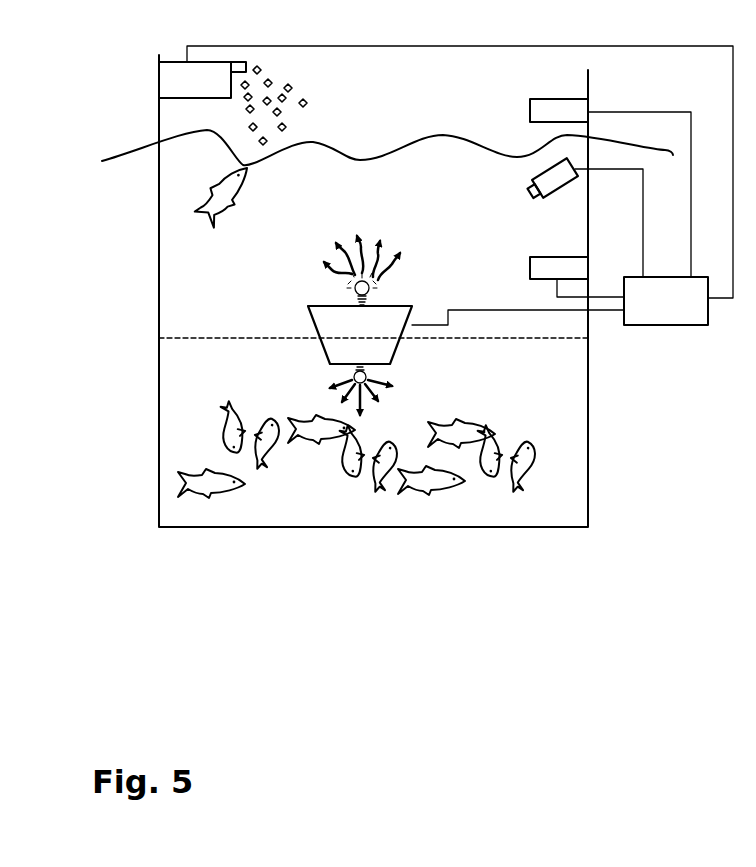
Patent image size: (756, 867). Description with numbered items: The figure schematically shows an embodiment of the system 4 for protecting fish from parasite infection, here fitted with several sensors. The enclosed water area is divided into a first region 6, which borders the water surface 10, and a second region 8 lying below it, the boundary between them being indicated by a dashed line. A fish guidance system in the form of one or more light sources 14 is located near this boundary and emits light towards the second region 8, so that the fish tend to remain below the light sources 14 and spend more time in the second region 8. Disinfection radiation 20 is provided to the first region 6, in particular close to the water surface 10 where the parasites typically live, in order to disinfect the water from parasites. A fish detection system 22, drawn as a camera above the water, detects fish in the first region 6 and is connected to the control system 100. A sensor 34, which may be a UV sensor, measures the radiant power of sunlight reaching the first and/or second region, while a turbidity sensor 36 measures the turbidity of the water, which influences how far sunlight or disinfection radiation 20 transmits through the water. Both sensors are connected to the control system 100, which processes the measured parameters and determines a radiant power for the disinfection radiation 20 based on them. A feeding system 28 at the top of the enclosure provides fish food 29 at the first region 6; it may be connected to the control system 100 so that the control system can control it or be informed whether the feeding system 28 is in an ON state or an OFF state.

The system for protecting fish from parasite infection 4 is at (318, 323).
The first region 6 is at (175, 242).
The second region 8 is at (175, 362).
The water surface 10 is at (397, 145).
The light sources 14 is at (392, 376).
The disinfection radiation 20 is at (388, 232).
The fish detection system 22 is at (567, 180).
The feeding system 28 is at (166, 77).
The fish food 29 is at (298, 77).
The sensor 34 is at (530, 110).
The turbidity sensor 36 is at (530, 267).
The control system 100 is at (666, 301).